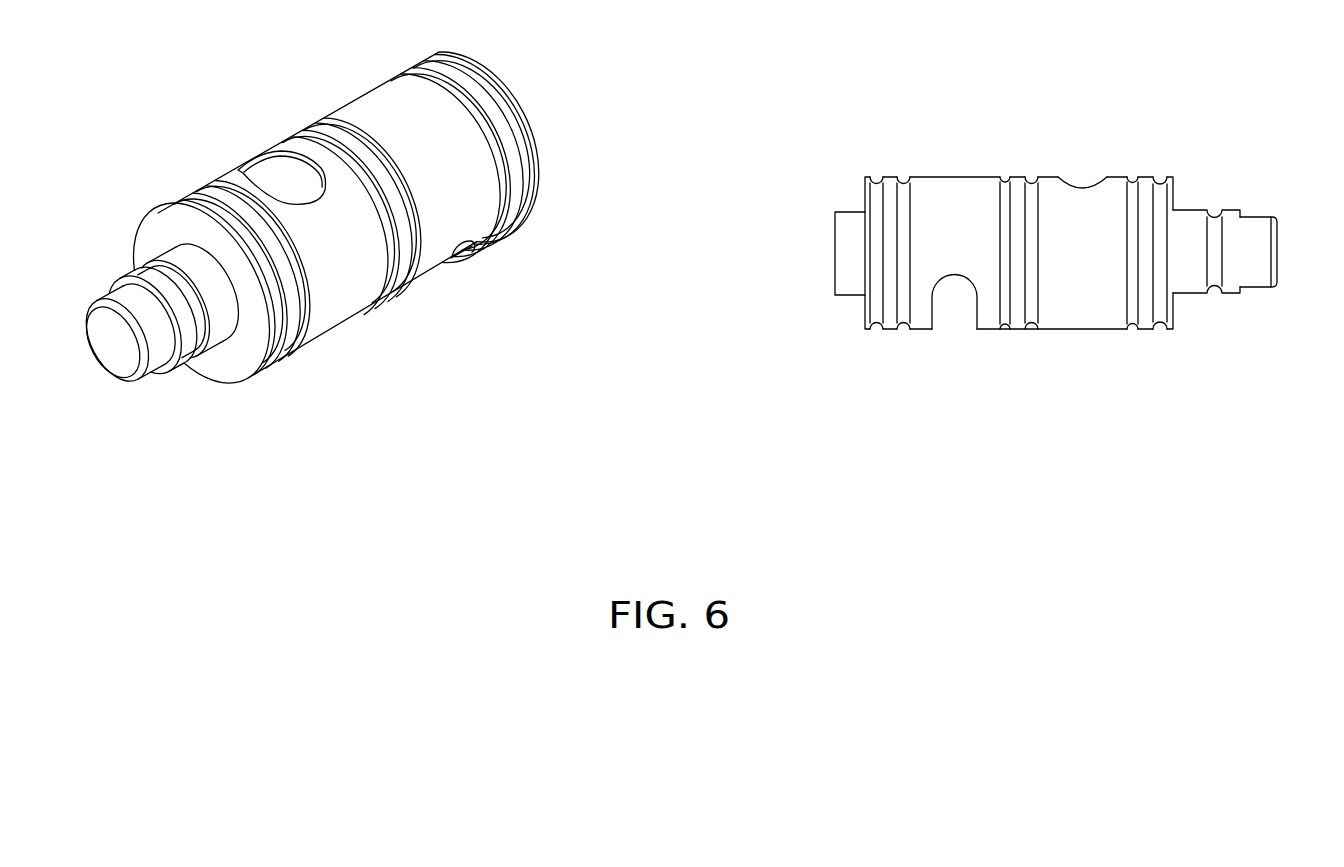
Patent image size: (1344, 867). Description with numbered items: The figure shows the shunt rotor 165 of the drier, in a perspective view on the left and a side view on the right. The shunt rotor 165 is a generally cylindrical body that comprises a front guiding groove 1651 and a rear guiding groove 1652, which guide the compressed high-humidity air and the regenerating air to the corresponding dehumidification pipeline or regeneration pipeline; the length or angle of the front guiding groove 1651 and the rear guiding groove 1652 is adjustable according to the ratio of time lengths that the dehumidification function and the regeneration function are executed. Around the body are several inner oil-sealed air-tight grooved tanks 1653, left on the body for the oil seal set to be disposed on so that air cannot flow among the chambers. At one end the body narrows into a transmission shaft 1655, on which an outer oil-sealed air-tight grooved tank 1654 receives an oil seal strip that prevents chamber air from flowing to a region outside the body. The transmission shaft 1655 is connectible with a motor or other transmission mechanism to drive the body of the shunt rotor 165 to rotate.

The shunt rotor 165 is at (95, 57).
The front guiding groove 1651 is at (276, 173).
The rear guiding groove 1652 is at (463, 250).
The inner oil-sealed air-tight grooved tank 1653 is at (283, 357).
The outer oil-sealed air-tight grooved tank 1654 is at (190, 372).
The transmission shaft 1655 is at (123, 372).